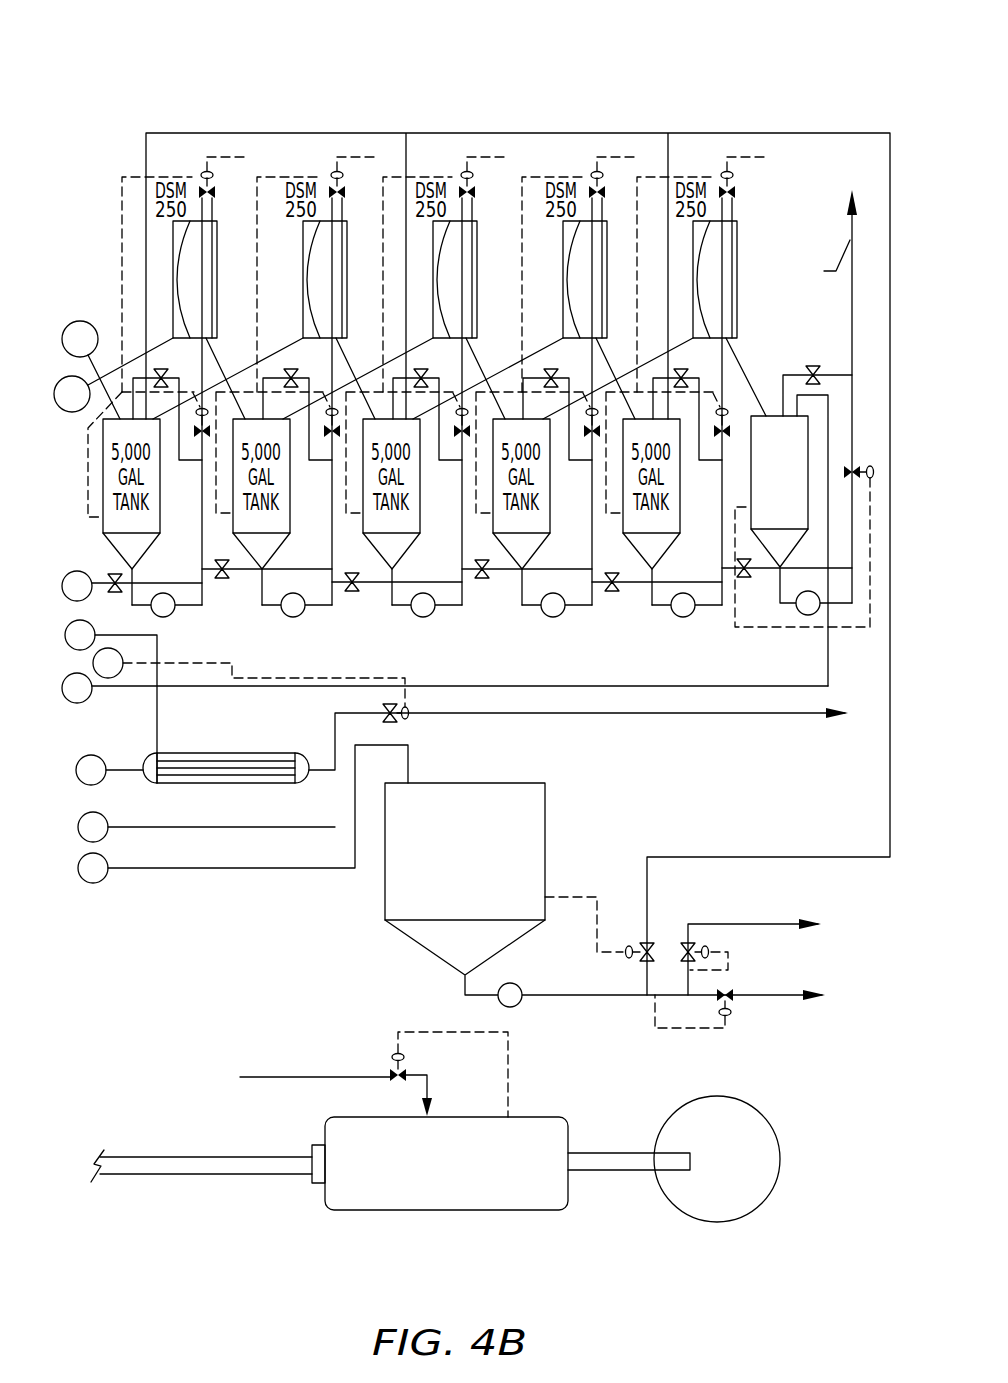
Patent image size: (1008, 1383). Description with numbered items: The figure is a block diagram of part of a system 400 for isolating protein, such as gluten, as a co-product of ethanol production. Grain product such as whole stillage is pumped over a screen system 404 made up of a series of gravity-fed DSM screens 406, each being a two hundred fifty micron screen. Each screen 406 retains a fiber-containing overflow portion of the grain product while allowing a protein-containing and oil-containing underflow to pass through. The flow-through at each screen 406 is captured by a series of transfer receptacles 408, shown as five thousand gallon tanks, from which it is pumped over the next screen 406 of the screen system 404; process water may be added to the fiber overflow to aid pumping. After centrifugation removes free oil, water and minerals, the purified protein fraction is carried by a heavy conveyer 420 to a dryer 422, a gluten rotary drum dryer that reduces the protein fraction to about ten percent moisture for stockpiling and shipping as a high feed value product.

The system 400 is at (245, 75).
The screen system 404 is at (117, 175).
The DSM screen 406 is at (736, 236).
The transfer receptacle 408 is at (113, 522).
The conveyer 420 is at (155, 1160).
The dryer 422 is at (455, 1200).